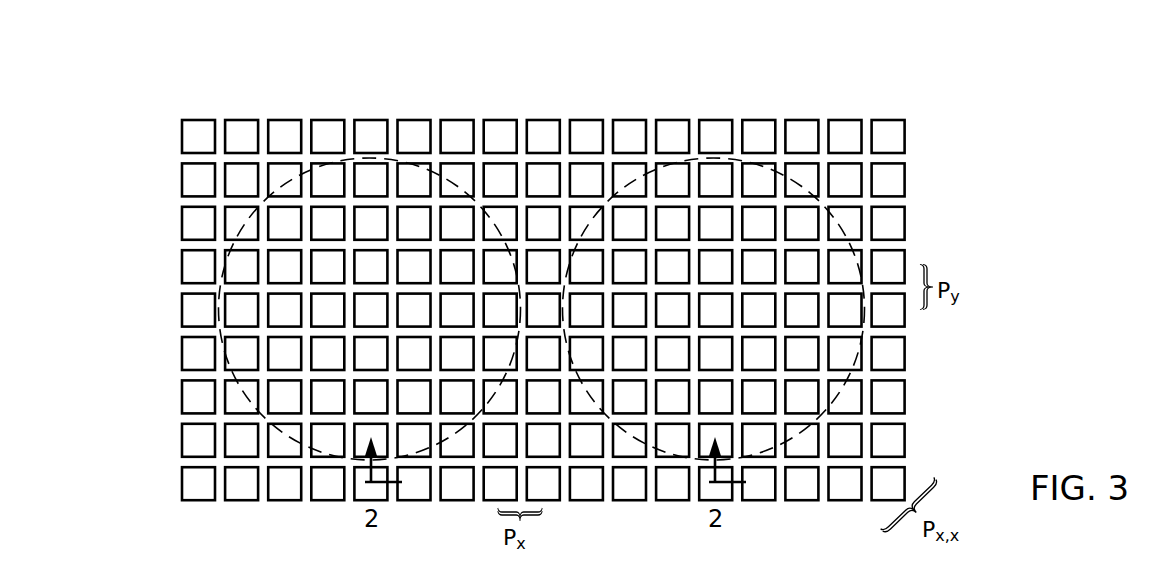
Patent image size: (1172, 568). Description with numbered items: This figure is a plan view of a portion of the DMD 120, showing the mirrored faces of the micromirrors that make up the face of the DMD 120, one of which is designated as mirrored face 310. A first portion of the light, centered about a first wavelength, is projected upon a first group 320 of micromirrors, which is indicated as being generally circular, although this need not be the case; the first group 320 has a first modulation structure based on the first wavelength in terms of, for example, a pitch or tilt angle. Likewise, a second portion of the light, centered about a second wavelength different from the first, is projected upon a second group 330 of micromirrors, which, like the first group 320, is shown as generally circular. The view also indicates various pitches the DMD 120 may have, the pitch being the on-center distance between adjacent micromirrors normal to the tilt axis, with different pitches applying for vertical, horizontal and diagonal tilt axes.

The DMD 120 is at (619, 75).
The mirrored face 310 is at (544, 311).
The first group of micromirrors 320 is at (372, 158).
The second group of micromirrors 330 is at (710, 157).